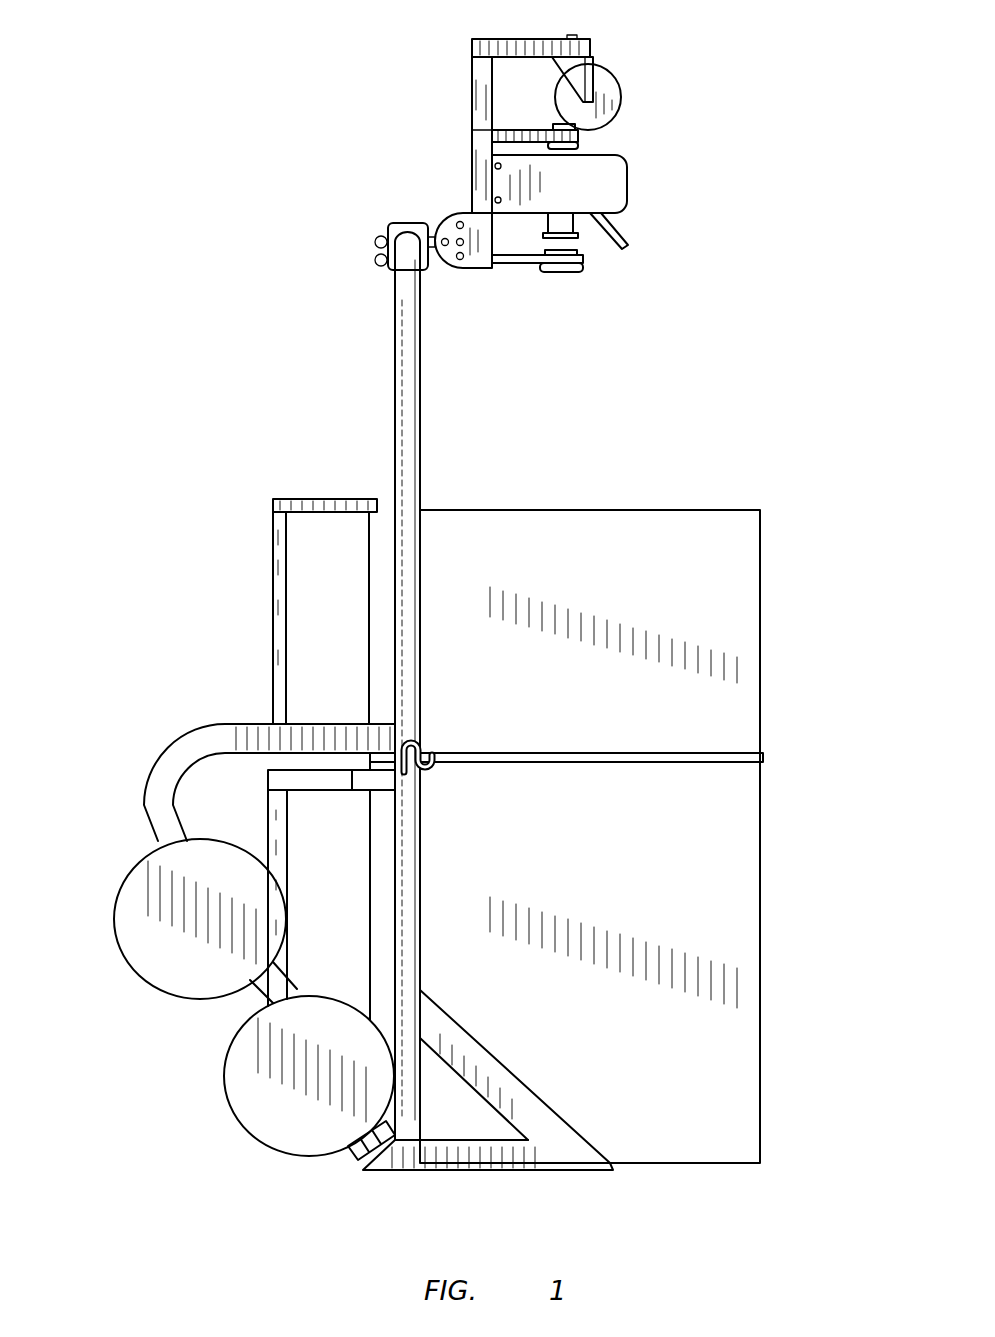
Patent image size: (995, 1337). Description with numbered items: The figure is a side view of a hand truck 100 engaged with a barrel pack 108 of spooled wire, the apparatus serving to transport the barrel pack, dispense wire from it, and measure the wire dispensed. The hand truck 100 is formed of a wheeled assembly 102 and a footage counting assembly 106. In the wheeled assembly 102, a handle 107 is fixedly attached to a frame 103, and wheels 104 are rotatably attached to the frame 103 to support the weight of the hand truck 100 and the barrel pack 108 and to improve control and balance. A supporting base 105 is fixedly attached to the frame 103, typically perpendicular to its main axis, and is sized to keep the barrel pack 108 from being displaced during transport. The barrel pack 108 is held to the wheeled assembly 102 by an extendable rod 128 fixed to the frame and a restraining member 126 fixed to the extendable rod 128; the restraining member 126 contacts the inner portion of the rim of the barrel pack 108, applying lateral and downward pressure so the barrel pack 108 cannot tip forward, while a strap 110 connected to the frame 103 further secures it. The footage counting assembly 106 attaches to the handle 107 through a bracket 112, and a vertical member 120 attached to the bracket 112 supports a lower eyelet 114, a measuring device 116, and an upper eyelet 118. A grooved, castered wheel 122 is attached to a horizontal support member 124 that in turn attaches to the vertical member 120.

The hand truck 100 is at (155, 48).
The wheeled assembly 102 is at (332, 354).
The frame 103 is at (150, 775).
The wheels 104 is at (135, 860).
The supporting base 105 is at (530, 1170).
The footage counting assembly 106 is at (643, 107).
The handle 107 is at (407, 388).
The barrel pack 108 is at (760, 565).
The strap 110 is at (764, 757).
The bracket 112 is at (404, 224).
The lower eyelet 114 is at (585, 262).
The measuring device 116 is at (628, 188).
The upper eyelet 118 is at (580, 137).
The vertical member 120 is at (472, 100).
The grooved, castered wheel 122 is at (617, 78).
The horizontal support member 124 is at (530, 39).
The restraining member 126 is at (320, 500).
The extendable rod 128 is at (285, 545).